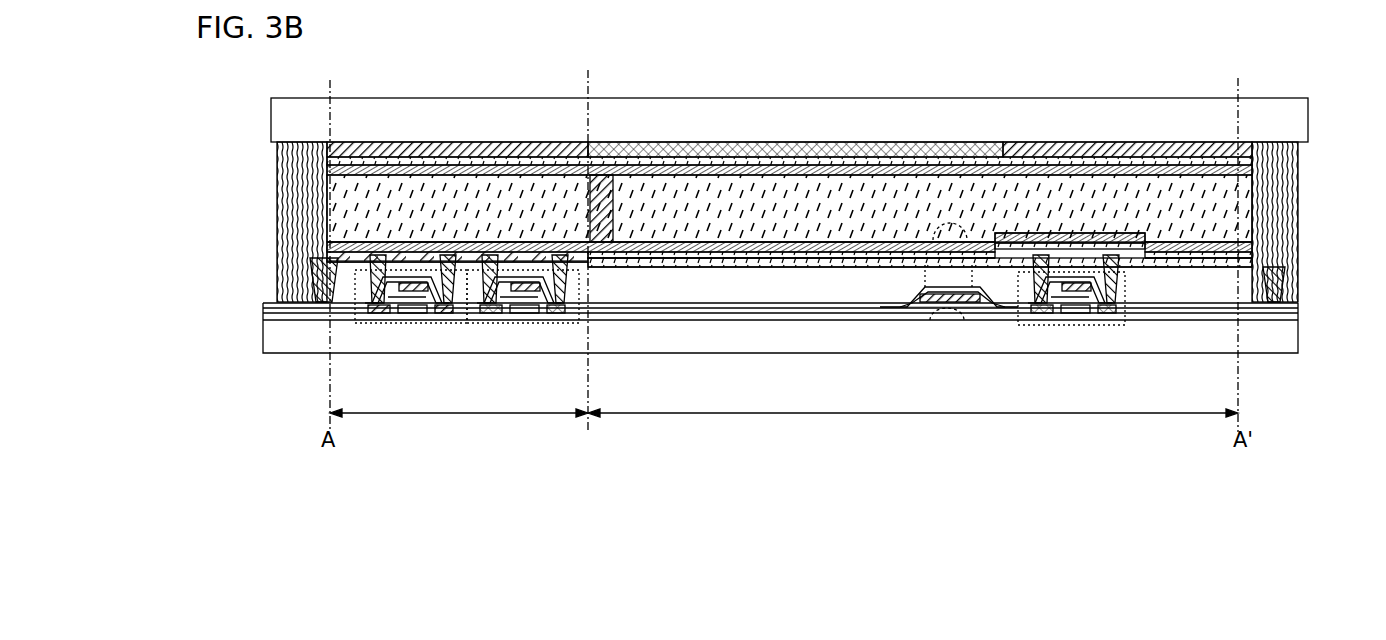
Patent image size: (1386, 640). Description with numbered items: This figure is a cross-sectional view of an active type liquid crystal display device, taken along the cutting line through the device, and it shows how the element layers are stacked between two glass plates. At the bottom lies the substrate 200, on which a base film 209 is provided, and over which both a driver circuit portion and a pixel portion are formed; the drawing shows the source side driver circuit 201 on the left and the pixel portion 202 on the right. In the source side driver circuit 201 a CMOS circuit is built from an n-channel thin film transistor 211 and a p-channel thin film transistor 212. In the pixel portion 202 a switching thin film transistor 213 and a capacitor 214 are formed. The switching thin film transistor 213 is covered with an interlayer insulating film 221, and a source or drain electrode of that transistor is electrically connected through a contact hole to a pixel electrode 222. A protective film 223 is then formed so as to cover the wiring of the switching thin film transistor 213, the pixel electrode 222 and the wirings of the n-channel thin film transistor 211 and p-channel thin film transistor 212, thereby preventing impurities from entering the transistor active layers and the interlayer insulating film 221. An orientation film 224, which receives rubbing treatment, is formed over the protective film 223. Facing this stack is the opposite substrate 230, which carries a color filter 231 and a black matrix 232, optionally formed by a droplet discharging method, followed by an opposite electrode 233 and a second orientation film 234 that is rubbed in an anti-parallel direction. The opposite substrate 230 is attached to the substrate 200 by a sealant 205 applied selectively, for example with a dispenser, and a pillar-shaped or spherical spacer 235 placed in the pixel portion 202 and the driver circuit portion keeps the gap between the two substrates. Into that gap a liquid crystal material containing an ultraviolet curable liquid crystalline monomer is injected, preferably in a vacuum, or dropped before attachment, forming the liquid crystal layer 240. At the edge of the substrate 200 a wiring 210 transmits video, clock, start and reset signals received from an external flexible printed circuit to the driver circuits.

The substrate 200 is at (300, 335).
The source side driver circuit 201 is at (738, 2).
The pixel portion 202 is at (913, 428).
The sealant 205 is at (298, 174).
The base film 209 is at (695, 322).
The wiring 210 is at (268, 299).
The n-channel thin film transistor 211 is at (417, 323).
The p-channel thin film transistor 212 is at (523, 331).
The switching thin film transistor 213 is at (1061, 333).
The capacitor 214 is at (947, 325).
The interlayer insulating film 221 is at (885, 292).
The pixel electrode 222 is at (785, 263).
The protective film 223 is at (1150, 263).
The orientation film 224 is at (1207, 263).
The opposite substrate 230 is at (455, 117).
The color filter 231 is at (697, 142).
The black matrix 232 is at (352, 143).
The opposite electrode 233 is at (1053, 143).
The orientation film 234 is at (1155, 143).
The spacer 235 is at (607, 142).
The liquid crystal layer 240 is at (930, 193).